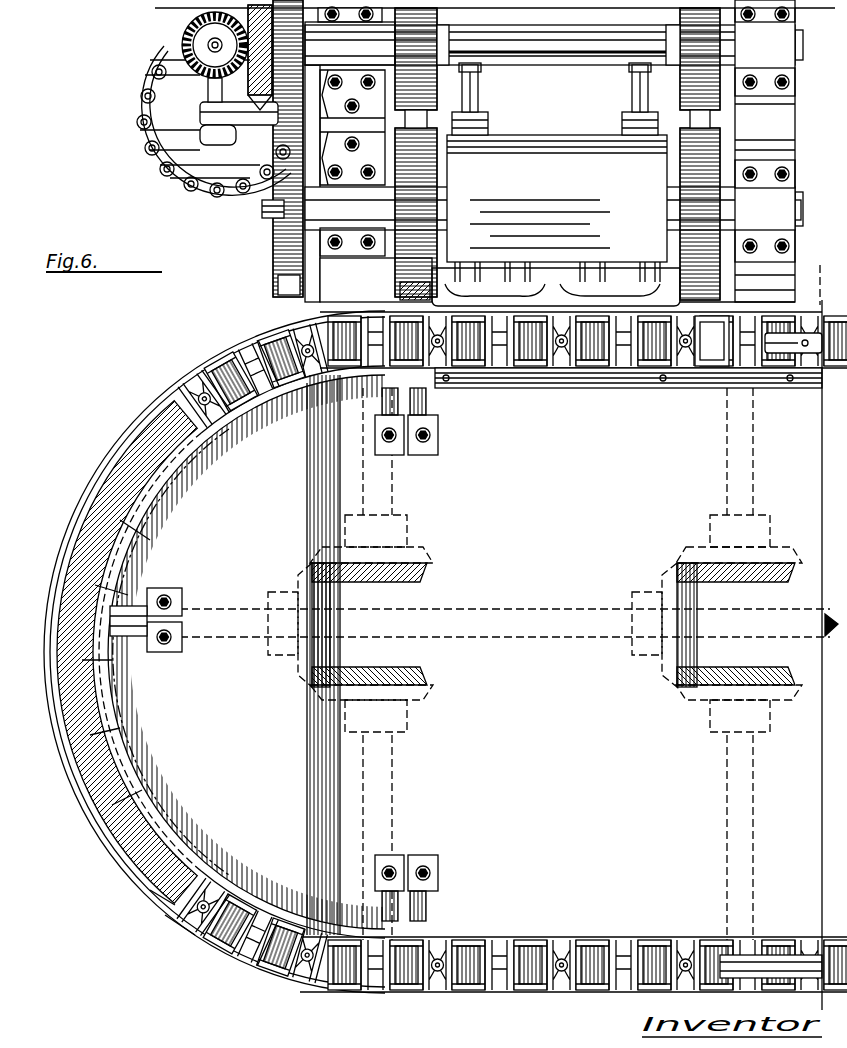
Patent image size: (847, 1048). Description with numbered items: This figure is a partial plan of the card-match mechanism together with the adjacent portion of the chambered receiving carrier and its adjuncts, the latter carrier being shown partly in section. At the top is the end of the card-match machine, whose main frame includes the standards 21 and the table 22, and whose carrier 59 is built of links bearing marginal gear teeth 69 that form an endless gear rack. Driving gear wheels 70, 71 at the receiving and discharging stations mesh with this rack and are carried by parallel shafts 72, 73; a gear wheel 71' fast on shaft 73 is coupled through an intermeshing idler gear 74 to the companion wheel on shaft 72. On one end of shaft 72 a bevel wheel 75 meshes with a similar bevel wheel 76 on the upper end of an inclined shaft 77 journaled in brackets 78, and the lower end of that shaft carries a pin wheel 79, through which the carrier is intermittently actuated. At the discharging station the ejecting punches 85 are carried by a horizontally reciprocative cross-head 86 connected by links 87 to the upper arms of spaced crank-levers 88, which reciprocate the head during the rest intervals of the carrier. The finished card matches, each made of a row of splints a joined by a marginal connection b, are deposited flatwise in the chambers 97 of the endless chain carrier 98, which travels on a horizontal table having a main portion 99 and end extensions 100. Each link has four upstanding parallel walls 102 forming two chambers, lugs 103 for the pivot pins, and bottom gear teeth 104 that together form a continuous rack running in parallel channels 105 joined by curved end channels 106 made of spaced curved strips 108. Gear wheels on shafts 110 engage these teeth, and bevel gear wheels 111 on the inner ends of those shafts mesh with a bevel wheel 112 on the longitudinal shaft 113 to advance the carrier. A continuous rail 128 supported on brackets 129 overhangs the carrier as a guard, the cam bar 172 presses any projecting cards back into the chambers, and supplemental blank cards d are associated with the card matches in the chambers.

The standards 21 is at (300, 252).
The table 22 is at (684, 152).
The carrier 59 is at (558, 288).
The marginal gear teeth 69 is at (398, 288).
The driving gear wheel 70 is at (432, 18).
The driving gear wheel 71 is at (557, 154).
The gear wheel 71' is at (269, 288).
The shaft 72 is at (536, 54).
The shaft 73 is at (268, 208).
The idler gear 74 is at (280, 130).
The bevel wheel 75 is at (306, 46).
The bevel wheel 76 is at (182, 30).
The inclined shaft 77 is at (208, 46).
The brackets 78 is at (205, 97).
The pin wheel 79 is at (138, 105).
The ejecting punches 85 is at (605, 262).
The cross-head 86 is at (557, 198).
The links 87 is at (480, 96).
The crank-levers 88 is at (634, 80).
The compartments or chambers 97 is at (565, 380).
The endless carrier 98 is at (100, 574).
The main portion of table 99 is at (695, 655).
The table extensions 100 is at (246, 655).
The upstanding parallel walls 102 is at (245, 956).
The lugs 103 is at (197, 380).
The gear teeth 104 is at (168, 500).
The parallel channels 105 is at (546, 992).
The curved end channels 106 is at (160, 892).
The curved strips 108 is at (185, 928).
The shafts 110 is at (392, 803).
The bevel gear wheels 111 is at (480, 556).
The bevel wheel 112 is at (298, 682).
The longitudinally-extending shaft 113 is at (522, 640).
The rail 128 is at (778, 354).
The brackets 129 is at (436, 394).
The cam bar 172 is at (665, 386).
The splints a is at (605, 950).
The marginal connection b is at (388, 997).
The supplemental blank cards d is at (716, 360).